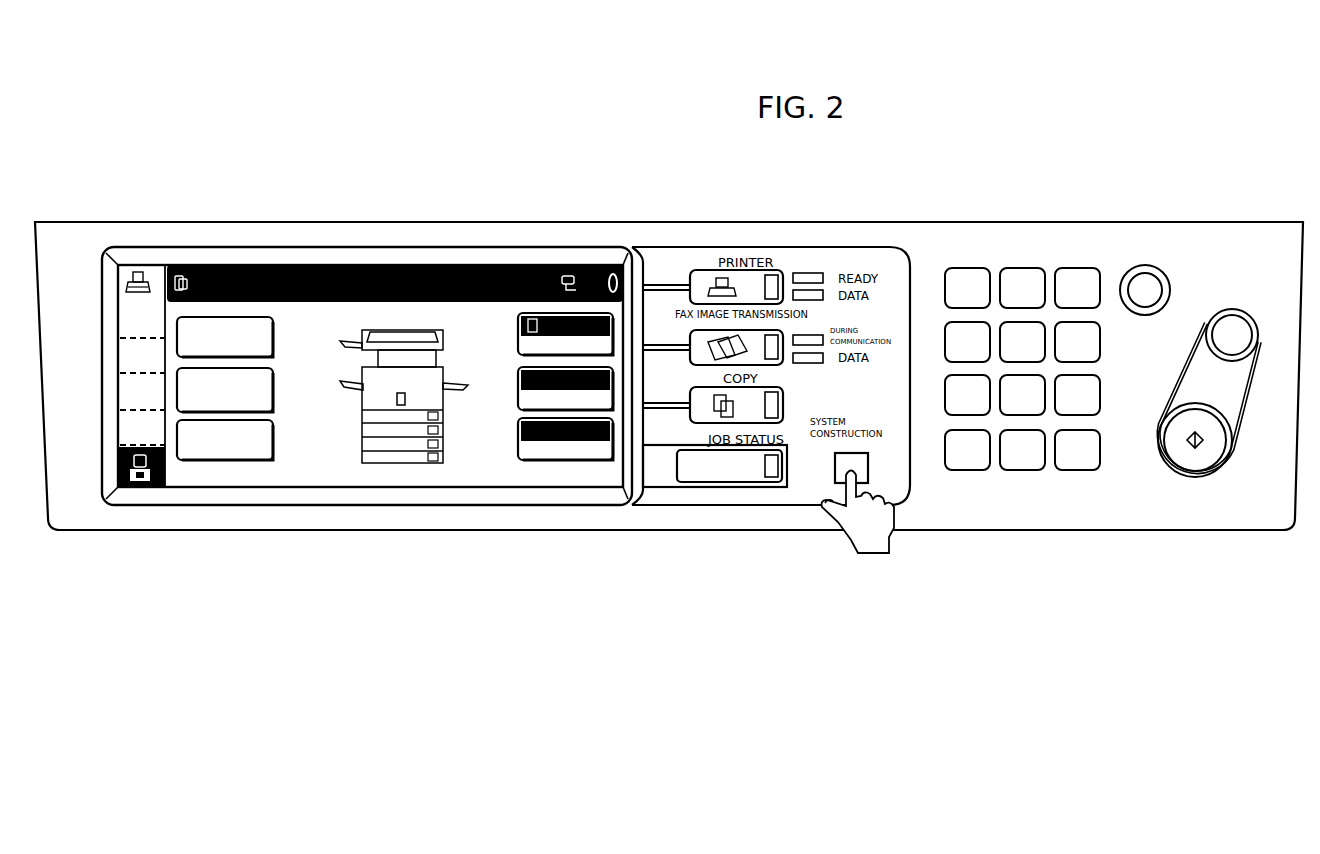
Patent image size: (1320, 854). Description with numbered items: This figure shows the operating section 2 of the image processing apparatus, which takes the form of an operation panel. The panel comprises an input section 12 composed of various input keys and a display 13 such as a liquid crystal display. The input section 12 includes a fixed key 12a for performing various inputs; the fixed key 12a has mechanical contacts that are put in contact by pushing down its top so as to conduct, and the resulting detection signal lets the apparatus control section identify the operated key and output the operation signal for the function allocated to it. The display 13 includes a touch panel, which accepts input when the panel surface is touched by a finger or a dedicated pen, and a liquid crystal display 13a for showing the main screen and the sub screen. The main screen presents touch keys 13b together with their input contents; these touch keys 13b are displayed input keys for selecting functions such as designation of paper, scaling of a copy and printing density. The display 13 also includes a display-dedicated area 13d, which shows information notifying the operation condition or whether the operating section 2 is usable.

The operating section 2 is at (1121, 205).
The input section 12 is at (1079, 499).
The fixed key 12a is at (1017, 462).
The display 13 is at (367, 397).
The liquid crystal display 13a is at (492, 488).
The touch keys 13b is at (220, 488).
The display-dedicated area 13d is at (245, 262).